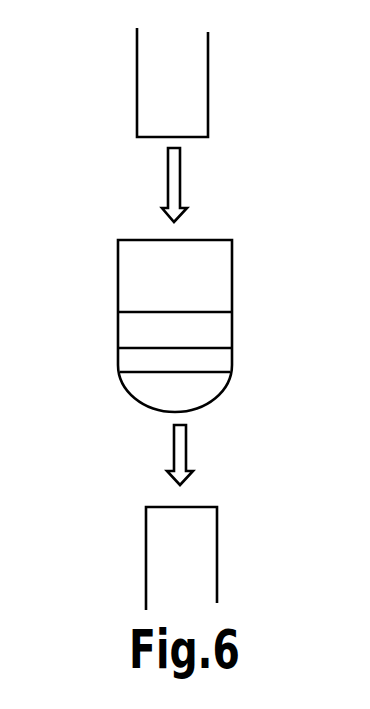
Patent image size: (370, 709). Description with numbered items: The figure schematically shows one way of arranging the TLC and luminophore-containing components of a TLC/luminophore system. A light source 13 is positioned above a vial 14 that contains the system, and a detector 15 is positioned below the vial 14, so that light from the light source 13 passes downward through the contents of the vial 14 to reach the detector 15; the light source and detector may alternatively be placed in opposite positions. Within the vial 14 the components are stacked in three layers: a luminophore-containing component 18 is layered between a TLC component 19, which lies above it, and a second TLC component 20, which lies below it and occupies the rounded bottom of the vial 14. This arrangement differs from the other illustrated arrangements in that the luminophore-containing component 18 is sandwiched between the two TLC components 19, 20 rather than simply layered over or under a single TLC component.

The light source 13 is at (208, 75).
The vial 14 is at (232, 267).
The detector 15 is at (217, 553).
The luminophore-containing component 18 is at (132, 360).
The TLC component 19 is at (217, 330).
The TLC component 20 is at (198, 393).